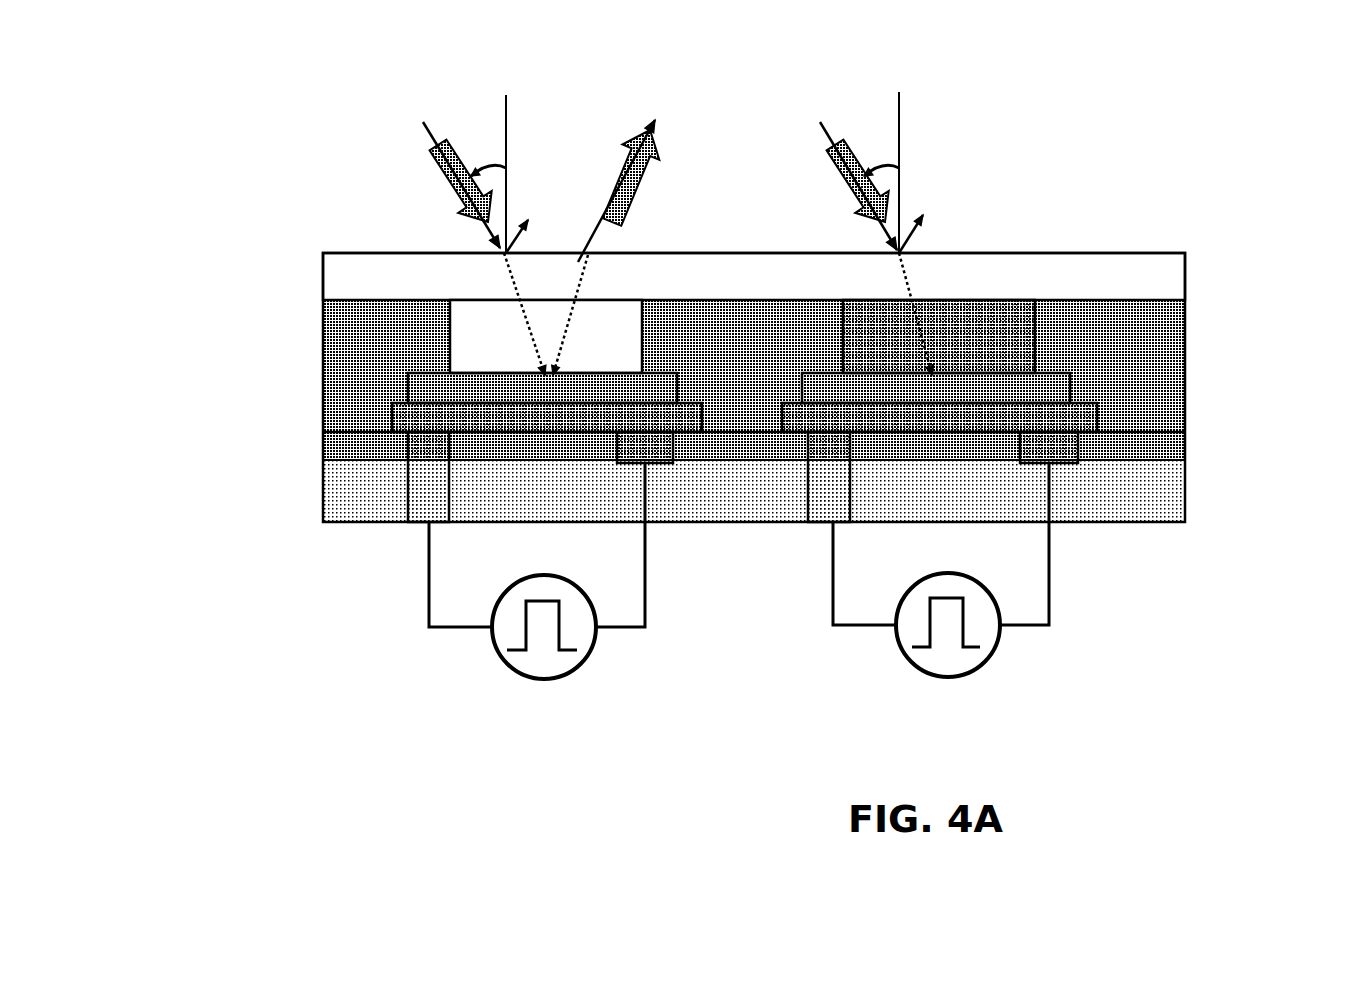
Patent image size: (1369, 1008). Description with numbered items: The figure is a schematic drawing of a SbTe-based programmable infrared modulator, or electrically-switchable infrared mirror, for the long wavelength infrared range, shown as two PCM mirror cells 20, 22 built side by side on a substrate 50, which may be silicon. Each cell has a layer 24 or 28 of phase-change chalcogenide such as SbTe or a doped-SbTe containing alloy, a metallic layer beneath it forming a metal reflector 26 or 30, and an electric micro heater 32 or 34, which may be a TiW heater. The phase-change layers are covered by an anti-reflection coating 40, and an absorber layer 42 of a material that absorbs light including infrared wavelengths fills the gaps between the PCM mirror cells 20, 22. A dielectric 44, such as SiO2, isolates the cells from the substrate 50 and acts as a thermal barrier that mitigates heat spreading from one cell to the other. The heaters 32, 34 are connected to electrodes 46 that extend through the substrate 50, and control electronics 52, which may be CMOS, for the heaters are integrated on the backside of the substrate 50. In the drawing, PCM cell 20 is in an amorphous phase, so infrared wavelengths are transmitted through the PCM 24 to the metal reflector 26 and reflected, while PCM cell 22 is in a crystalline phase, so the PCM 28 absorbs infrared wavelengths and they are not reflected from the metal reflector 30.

The PCM cell 20 is at (625, 288).
The PCM cell 22 is at (1005, 288).
The phase-change chalcogenide layer 24 is at (465, 352).
The metal reflector 26 is at (435, 388).
The phase-change chalcogenide layer 28 is at (1090, 342).
The metal reflector 30 is at (1090, 370).
The heater 32 is at (420, 415).
The heater 34 is at (1085, 405).
The anti-reflection coating 40 is at (352, 280).
The absorber layer 42 is at (365, 320).
The dielectric 44 is at (350, 445).
The electrodes 46 is at (435, 488).
The substrate 50 is at (1155, 500).
The control electronics 52 is at (547, 662).